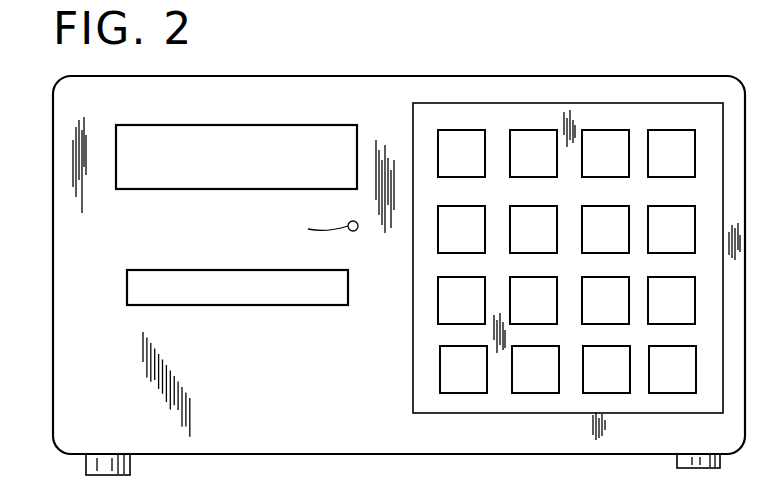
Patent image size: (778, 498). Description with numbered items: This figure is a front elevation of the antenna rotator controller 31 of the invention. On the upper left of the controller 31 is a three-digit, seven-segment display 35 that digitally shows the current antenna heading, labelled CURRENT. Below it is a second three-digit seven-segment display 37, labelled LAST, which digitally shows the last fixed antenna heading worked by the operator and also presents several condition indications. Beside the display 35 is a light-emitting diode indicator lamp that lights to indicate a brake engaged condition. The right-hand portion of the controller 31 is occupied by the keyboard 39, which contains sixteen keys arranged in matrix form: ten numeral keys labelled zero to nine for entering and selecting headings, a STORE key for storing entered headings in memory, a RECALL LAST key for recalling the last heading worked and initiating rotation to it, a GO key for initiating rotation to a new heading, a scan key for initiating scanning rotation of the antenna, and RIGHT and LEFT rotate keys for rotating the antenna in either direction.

The controller 31 is at (53, 212).
The three-digit, seven-segment display 35 is at (116, 140).
The second three-digit seven-segment display 37 is at (127, 292).
The keyboard 39 is at (413, 122).